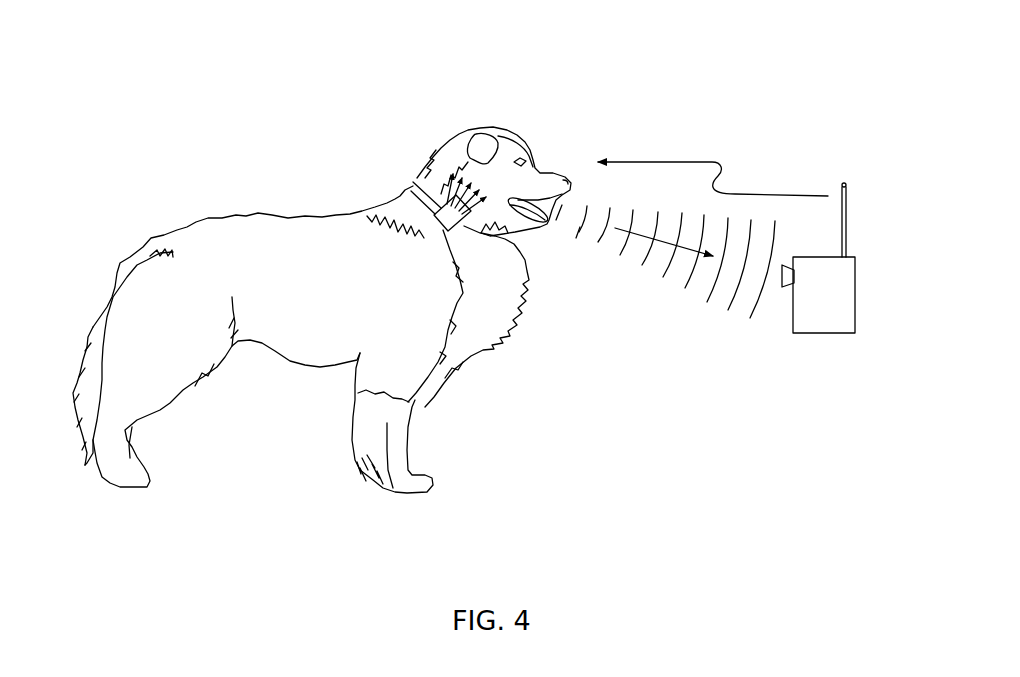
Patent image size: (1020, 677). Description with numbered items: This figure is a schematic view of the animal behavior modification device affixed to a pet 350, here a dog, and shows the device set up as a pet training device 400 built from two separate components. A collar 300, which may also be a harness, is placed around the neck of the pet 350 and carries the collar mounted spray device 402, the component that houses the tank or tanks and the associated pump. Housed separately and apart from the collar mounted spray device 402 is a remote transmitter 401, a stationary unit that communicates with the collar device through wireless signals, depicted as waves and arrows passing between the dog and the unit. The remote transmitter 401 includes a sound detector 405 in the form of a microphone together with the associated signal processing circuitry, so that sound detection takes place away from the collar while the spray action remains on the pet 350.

The collar 300 is at (410, 224).
The pet 350 is at (508, 305).
The pet training device 400 is at (726, 67).
The remote transmitter 401 is at (843, 292).
The collar mounted spray device 402 is at (437, 232).
The sound detector 405 is at (781, 284).